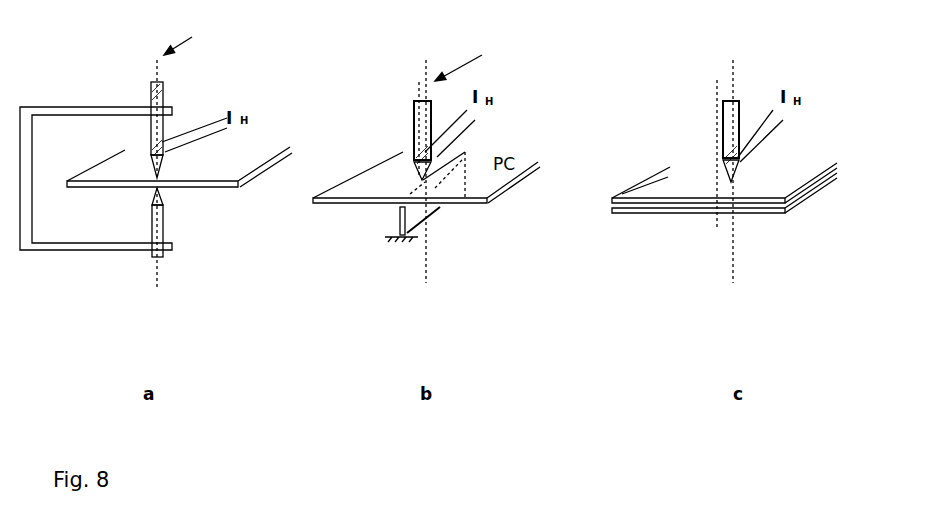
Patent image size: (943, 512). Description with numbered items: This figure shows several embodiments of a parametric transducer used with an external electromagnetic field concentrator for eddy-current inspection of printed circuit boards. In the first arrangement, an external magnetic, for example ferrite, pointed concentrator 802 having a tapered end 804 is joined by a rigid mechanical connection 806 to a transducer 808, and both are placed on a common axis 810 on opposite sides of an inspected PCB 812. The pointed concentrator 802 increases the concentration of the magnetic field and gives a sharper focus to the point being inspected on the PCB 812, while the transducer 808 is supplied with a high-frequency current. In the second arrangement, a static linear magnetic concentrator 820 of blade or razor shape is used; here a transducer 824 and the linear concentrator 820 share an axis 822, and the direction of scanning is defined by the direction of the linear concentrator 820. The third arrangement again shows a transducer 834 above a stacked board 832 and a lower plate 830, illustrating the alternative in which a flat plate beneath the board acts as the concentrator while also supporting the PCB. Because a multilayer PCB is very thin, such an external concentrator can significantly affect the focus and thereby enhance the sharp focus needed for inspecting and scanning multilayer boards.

The pointed concentrator 802 is at (152, 255).
The tapered end 804 is at (192, 207).
The rigid mechanical connection 806 is at (80, 113).
The transducer 808 is at (152, 87).
The common axis 810 is at (204, 42).
The inspected PCB 812 is at (179, 166).
The linear magnetic concentrator 820 is at (397, 228).
The axis 822 is at (489, 57).
The transducer 824 is at (415, 103).
The lower plate 830 is at (700, 208).
The upper plate 832 is at (740, 144).
The probe 834 is at (722, 103).